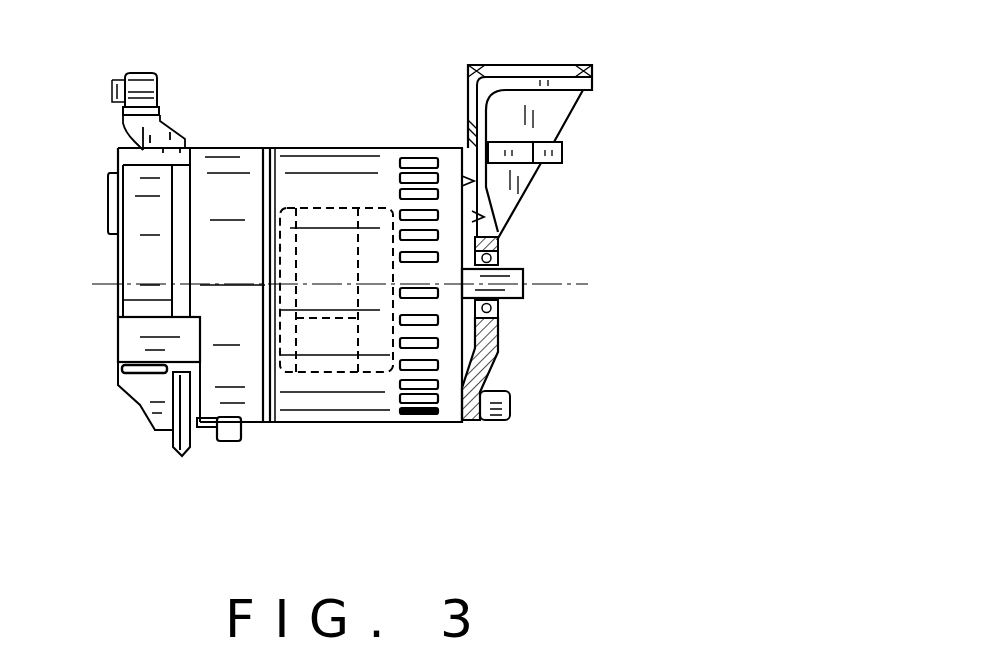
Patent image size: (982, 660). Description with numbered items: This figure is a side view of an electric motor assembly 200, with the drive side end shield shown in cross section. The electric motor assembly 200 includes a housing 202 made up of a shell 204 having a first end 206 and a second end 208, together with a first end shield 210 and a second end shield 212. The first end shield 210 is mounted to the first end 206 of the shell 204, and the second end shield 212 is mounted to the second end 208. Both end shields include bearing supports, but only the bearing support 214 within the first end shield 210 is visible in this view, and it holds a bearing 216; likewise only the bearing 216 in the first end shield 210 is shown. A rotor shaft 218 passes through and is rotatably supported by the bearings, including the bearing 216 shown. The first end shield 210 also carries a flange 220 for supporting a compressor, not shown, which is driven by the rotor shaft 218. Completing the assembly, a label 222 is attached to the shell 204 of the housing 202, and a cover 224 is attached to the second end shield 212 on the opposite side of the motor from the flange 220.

The electric motor assembly 200 is at (372, 142).
The housing 202 is at (316, 427).
The shell 204 is at (398, 428).
The first end 206 is at (458, 428).
The second end 208 is at (272, 426).
The first end shield 210 is at (499, 362).
The second end shield 212 is at (215, 402).
The bearing support 214 is at (499, 325).
The bearing 216 is at (502, 255).
The rotor shaft 218 is at (509, 292).
The flange 220 is at (561, 60).
The label 222 is at (327, 205).
The cover 224 is at (133, 345).